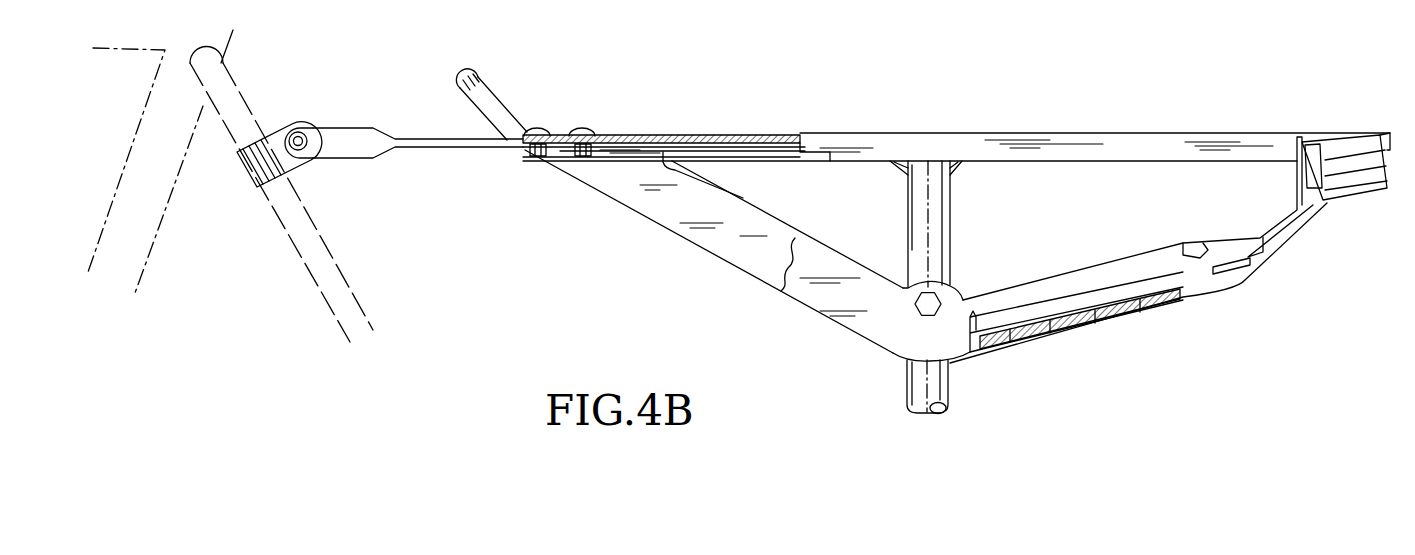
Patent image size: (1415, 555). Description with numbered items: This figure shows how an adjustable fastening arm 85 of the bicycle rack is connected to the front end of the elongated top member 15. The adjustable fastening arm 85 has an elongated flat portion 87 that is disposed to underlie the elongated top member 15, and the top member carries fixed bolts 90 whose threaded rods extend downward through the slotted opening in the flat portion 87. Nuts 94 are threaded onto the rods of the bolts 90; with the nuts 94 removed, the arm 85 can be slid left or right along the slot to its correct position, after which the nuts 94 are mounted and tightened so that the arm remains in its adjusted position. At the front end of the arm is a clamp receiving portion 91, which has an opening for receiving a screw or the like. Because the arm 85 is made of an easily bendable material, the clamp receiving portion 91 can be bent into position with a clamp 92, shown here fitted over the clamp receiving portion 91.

The elongated top member 15 is at (1098, 120).
The adjustable fastening arm 85 is at (476, 173).
The elongated flat portion 87 is at (745, 198).
The fixed bolts 90 is at (582, 130).
The clamp receiving portion 91 is at (298, 134).
The clamp 92 is at (259, 163).
The nuts 94 is at (580, 157).